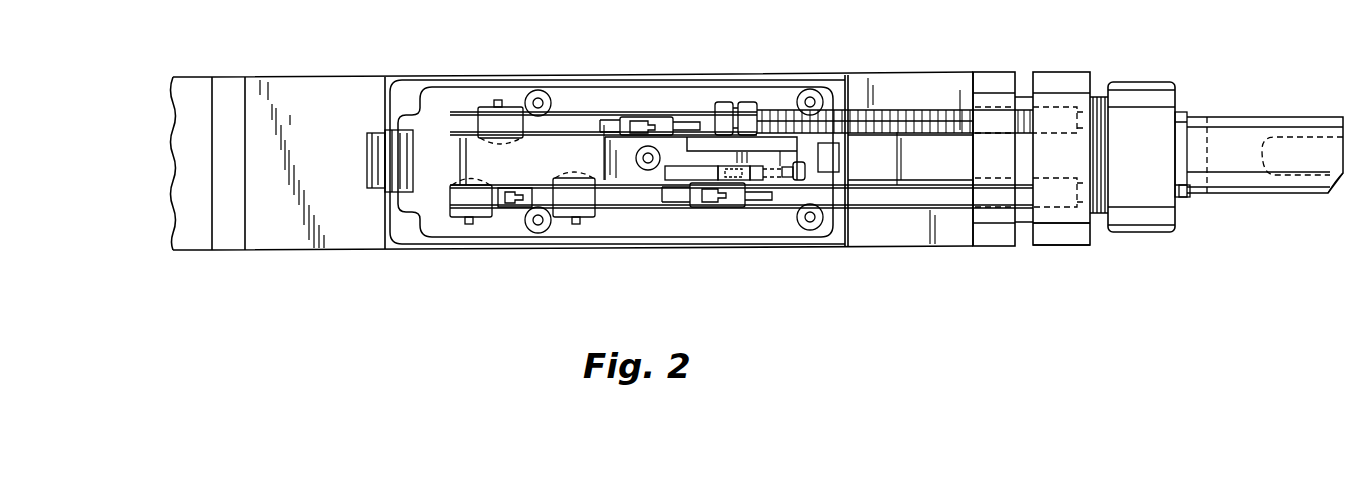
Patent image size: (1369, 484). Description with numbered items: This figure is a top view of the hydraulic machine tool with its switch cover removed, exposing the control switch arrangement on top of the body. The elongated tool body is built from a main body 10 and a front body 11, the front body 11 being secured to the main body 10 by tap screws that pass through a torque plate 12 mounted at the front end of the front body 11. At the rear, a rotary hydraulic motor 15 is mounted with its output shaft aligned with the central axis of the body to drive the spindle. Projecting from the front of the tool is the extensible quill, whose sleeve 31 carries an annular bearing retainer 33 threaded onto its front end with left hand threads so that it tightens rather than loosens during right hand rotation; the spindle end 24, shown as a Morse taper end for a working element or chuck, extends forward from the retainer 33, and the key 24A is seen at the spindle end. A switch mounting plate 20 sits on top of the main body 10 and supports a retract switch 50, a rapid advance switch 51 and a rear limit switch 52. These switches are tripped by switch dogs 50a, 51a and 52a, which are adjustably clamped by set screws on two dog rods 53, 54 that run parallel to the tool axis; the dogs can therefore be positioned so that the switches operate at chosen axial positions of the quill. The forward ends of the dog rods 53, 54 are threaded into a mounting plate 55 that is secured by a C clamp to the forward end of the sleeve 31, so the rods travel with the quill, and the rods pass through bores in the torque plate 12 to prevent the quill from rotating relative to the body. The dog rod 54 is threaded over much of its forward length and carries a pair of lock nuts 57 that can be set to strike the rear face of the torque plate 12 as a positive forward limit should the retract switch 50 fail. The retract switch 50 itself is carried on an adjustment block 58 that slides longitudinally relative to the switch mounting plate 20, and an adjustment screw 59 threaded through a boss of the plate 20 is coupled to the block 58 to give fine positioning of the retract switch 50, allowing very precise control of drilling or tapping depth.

The main body 10 is at (343, 88).
The front body 11 is at (915, 85).
The torque plate 12 is at (993, 78).
The rotary hydraulic motor 15 is at (195, 92).
The switch mounting plate 20 is at (580, 147).
The spindle end 24 is at (1242, 128).
The key 24A is at (1183, 192).
The sleeve 31 is at (1095, 95).
The annular bearing retainer 33 is at (1155, 90).
The retract switch 50 is at (743, 204).
The switch dog 50a is at (580, 217).
The rapid advance switch 51 is at (660, 118).
The switch dog 51a is at (512, 107).
The rear limit switch 52 is at (500, 212).
The switch dog 52a is at (452, 218).
The dog rod 53 is at (900, 198).
The dog rod 54 is at (860, 108).
The mounting plate 55 is at (1058, 238).
The lock nuts 57 is at (748, 103).
The adjustment block 58 is at (683, 177).
The adjustment screw 59 is at (797, 180).